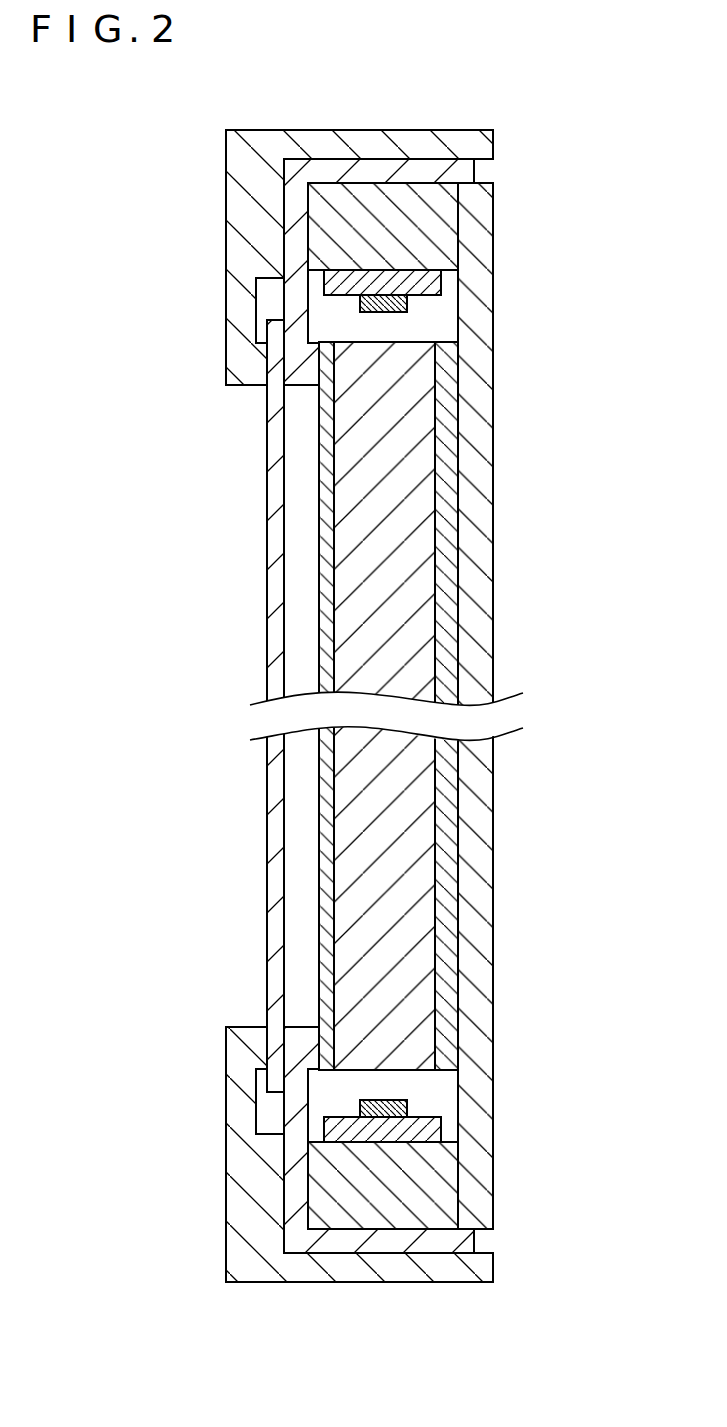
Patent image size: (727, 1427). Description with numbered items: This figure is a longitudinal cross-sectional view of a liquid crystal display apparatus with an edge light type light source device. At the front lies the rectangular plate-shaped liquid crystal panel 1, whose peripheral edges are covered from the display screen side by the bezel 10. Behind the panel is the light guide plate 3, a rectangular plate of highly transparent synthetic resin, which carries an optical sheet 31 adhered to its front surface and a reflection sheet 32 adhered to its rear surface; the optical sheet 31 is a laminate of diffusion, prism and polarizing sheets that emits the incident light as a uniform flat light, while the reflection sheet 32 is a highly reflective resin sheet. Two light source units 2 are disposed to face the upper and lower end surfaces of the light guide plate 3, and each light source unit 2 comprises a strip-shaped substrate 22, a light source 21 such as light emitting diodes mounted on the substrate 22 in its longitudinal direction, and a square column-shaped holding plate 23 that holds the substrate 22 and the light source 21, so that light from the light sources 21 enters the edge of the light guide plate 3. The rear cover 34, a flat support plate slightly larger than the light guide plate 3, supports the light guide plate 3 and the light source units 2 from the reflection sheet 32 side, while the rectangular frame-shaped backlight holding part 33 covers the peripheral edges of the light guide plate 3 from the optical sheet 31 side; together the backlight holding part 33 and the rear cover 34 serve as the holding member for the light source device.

The liquid crystal panel 1 is at (273, 498).
The light source unit 2 is at (465, 706).
The light guide plate 3 is at (425, 460).
The bezel 10 is at (353, 130).
The light source 21 is at (407, 305).
The substrate 22 is at (441, 280).
The holding plate 23 is at (450, 243).
The optical sheet 31 is at (327, 602).
The reflection sheet 32 is at (448, 565).
The backlight holding part 33 is at (293, 243).
The rear cover 34 is at (485, 1015).